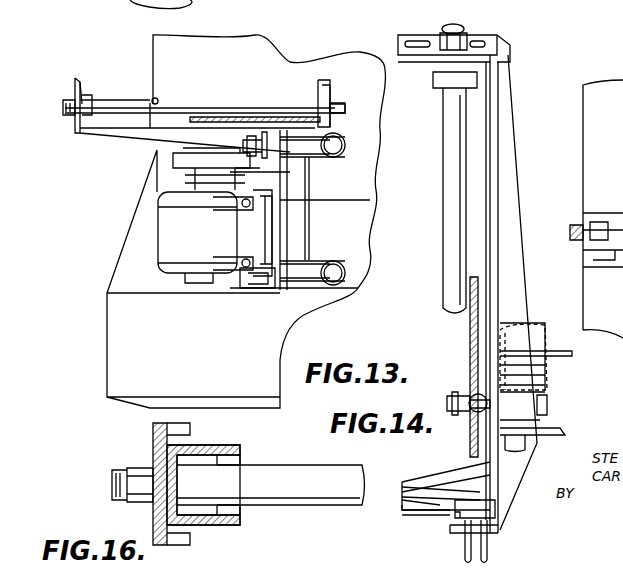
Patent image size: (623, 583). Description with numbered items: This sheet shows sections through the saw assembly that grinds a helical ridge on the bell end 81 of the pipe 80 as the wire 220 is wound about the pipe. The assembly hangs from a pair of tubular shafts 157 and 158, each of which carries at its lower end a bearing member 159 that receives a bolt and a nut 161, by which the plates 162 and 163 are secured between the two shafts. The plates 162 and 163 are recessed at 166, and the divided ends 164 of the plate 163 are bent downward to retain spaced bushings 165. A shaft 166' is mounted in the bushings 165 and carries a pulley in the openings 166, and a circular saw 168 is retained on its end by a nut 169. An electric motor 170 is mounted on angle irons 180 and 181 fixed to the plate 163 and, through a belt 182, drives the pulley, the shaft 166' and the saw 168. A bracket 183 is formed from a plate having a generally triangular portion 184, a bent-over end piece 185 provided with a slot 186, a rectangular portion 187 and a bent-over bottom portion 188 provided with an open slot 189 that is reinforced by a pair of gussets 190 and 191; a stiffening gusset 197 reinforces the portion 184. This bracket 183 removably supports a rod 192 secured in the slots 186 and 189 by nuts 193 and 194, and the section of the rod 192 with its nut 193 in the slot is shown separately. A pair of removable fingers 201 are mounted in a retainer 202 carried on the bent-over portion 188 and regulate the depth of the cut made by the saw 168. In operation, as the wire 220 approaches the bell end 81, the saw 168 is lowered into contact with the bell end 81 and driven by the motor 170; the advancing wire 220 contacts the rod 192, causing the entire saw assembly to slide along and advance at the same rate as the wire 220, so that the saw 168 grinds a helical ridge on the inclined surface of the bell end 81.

In FIG. 13, the pipe 80 is at (310, 62).
In FIG. 13, the bell end 81 is at (115, 374).
In FIG. 13, the tubular shaft 157 is at (346, 273).
In FIG. 13, the tubular shaft 158 is at (346, 145).
In FIG. 14, the bearing member 159 is at (550, 410).
In FIG. 13, the nut 161 is at (262, 286).
In FIG. 14, the nut 161 is at (546, 343).
In FIG. 13, the plate 162 is at (307, 240).
In FIG. 14, the plate 162 is at (562, 436).
In FIG. 13, the plate 163 is at (283, 219).
In FIG. 14, the plate 163 is at (573, 353).
In FIG. 14, the divided ends 164 is at (530, 369).
In FIG. 14, the bushing 165 is at (540, 392).
In FIG. 13, the recess 166 is at (288, 174).
In FIG. 13, the shaft 166' is at (269, 116).
In FIG. 14, the shaft 166' is at (458, 385).
In FIG. 13, the circular saw 168 is at (226, 116).
In FIG. 14, the circular saw 168 is at (470, 342).
In FIG. 14, the nut 169 is at (452, 398).
In FIG. 13, the electric motor 170 is at (178, 285).
In FIG. 13, the angle iron 180 is at (276, 208).
In FIG. 13, the angle iron 181 is at (266, 252).
In FIG. 13, the belt 182 is at (175, 162).
In FIG. 13, the bracket 183 is at (128, 146).
In FIG. 14, the bracket 183 is at (521, 114).
In FIG. 13, the triangular shaped portion 184 is at (100, 104).
In FIG. 14, the triangular shaped portion 184 is at (495, 147).
In FIG. 13, the bent-over end piece 185 is at (80, 90).
In FIG. 14, the bent-over end piece 185 is at (412, 56).
In FIG. 14, the slot 186 is at (423, 44).
In FIG. 14, the rectangular portion 187 is at (412, 503).
In FIG. 13, the bent-over bottom portion 188 is at (322, 84).
In FIG. 14, the bent-over bottom portion 188 is at (424, 506).
In FIG. 14, the open slot 189 is at (412, 487).
In FIG. 14, the gusset 190 is at (435, 480).
In FIG. 14, the gusset 191 is at (447, 512).
In FIG. 13, the rod 192 is at (183, 106).
In FIG. 14, the rod 192 is at (444, 208).
In FIG. 16, the rod 192 is at (302, 488).
In FIG. 13, the nut 193 is at (68, 116).
In FIG. 14, the nut 193 is at (466, 33).
In FIG. 16, the nut 193 is at (135, 462).
In FIG. 13, the nut 194 is at (346, 108).
In FIG. 14, the gusset 197 is at (510, 184).
In FIG. 14, the removable fingers 201 is at (475, 540).
In FIG. 14, the retainer 202 is at (490, 512).
In FIG. 13, the wire 220 is at (157, 99).